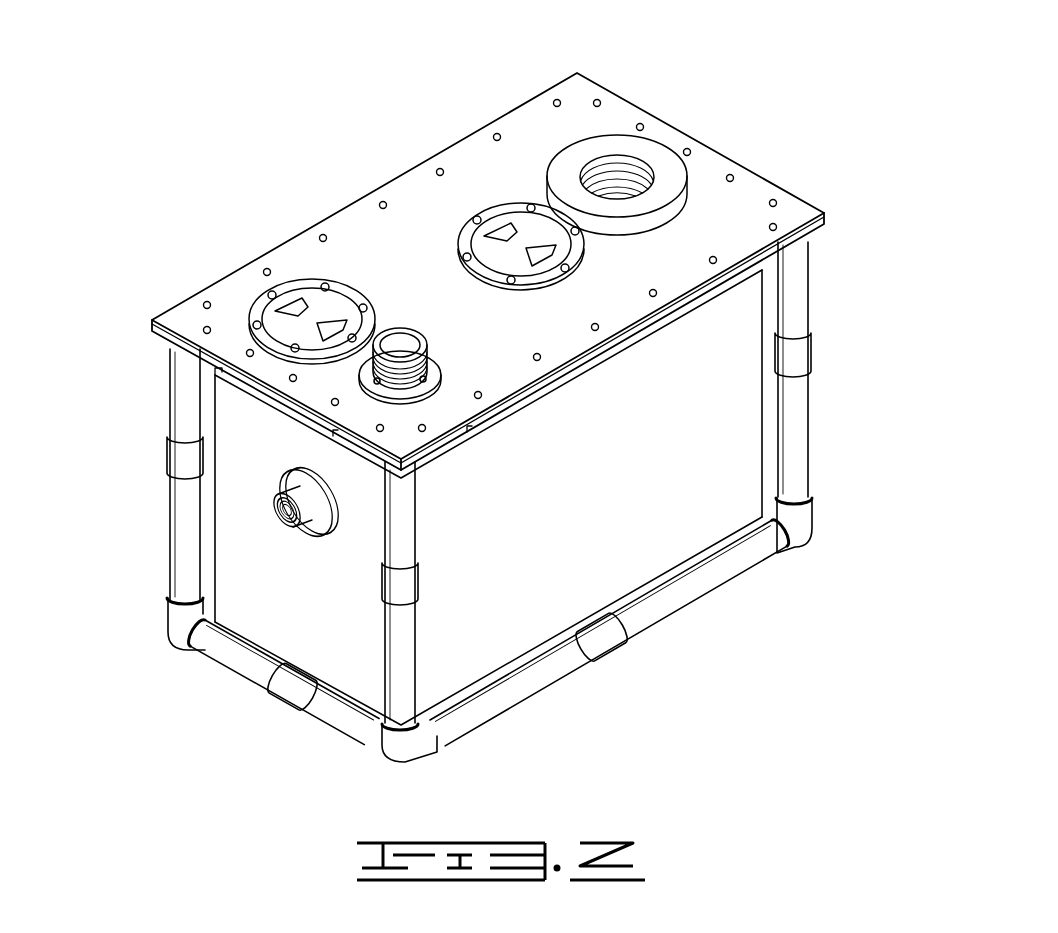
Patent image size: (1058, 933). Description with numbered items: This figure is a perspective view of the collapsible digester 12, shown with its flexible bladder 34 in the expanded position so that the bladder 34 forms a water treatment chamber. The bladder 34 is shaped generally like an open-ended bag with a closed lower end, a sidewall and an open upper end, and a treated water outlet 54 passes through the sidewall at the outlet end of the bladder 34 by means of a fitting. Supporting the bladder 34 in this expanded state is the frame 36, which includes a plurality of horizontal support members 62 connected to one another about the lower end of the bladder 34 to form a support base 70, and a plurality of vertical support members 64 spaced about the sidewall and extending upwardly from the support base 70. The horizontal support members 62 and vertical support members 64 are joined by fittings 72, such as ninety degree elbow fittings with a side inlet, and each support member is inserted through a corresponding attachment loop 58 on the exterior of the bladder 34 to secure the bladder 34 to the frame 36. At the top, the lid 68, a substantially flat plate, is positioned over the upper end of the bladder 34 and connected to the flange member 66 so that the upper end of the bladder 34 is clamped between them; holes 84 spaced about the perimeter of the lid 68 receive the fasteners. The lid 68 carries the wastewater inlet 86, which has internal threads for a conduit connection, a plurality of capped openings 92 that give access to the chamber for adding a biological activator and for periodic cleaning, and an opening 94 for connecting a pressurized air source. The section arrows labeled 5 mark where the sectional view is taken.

The collapsible digester 12 is at (323, 165).
The flexible bladder 34 is at (218, 507).
The frame 36 is at (490, 513).
The treated water outlet 54 is at (292, 523).
The attachment loops 58 is at (806, 358).
The horizontal support members 62 is at (481, 640).
The vertical support members 64 is at (808, 428).
The flange member 66 is at (152, 326).
The lid 68 is at (748, 167).
The support base 70 is at (340, 728).
The fittings 72 is at (812, 517).
The holes 84 is at (652, 292).
The wastewater inlet 86 is at (632, 163).
The openings 92 is at (513, 222).
The opening 94 is at (398, 340).
The section line 5- 5 is at (445, 397).